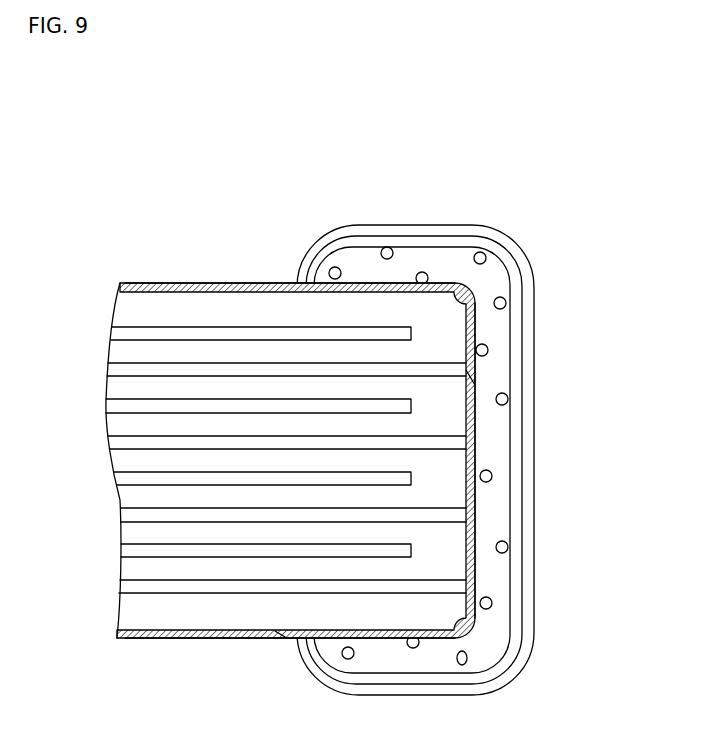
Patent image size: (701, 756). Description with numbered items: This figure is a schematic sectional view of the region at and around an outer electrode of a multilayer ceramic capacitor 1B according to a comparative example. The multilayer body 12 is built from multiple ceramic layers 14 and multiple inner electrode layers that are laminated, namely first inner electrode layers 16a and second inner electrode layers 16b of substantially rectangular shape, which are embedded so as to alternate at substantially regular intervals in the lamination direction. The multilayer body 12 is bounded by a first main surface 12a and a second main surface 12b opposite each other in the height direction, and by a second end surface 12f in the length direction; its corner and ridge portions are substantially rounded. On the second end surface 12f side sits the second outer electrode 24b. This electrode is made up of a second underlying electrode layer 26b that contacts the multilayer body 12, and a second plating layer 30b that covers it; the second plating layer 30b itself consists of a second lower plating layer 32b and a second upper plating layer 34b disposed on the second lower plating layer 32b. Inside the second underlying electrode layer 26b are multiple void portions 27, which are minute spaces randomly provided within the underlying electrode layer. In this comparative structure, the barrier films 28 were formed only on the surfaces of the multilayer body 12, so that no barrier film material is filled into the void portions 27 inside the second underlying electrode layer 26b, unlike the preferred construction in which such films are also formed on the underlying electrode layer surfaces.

The multilayer ceramic capacitor 1B is at (286, 408).
The multilayer body 12 is at (355, 451).
The first main surface 12a is at (227, 282).
The second main surface 12b is at (210, 633).
The second end surface 12f is at (468, 420).
The ceramic layers 14 is at (142, 353).
The first inner electrode layers 16a is at (250, 403).
The second inner electrode layers 16b is at (177, 438).
The second outer electrode 24b is at (415, 378).
The second underlying electrode layer 26b is at (355, 262).
The void portions 27 is at (488, 350).
The barrier films 28 is at (473, 377).
The second plating layer 30b is at (415, 403).
The second lower plating layer 32b is at (497, 173).
The second upper plating layer 34b is at (453, 228).